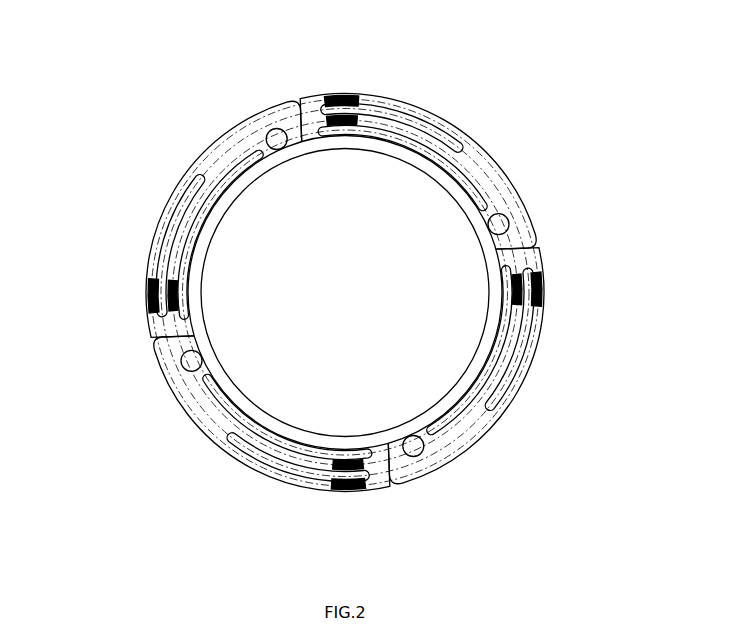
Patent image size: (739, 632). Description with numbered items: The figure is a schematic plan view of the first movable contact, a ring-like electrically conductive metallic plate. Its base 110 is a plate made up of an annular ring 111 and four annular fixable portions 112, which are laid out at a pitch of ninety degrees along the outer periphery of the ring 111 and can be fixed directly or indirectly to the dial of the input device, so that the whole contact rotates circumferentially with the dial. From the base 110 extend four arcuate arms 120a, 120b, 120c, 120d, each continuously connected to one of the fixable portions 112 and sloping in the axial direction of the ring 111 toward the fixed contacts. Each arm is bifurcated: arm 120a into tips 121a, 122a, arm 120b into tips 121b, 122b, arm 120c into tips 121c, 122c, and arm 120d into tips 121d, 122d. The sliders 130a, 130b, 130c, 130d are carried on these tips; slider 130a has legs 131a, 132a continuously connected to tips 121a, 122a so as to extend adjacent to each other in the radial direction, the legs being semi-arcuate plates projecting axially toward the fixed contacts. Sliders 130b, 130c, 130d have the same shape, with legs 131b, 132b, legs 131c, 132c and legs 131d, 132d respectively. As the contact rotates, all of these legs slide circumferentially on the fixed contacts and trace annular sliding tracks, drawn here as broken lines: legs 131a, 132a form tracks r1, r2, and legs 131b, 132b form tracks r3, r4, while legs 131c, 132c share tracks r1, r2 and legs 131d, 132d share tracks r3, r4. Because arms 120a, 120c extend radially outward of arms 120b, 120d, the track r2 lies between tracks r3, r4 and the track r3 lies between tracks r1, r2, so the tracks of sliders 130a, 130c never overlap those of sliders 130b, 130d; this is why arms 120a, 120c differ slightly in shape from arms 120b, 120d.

The base 110 is at (163, 380).
The ring 111 is at (493, 266).
The fixable portion 112 is at (277, 127).
The first arm 120a is at (468, 143).
The second arm 120b is at (206, 157).
The third arm 120c is at (222, 442).
The fourth arm 120d is at (483, 430).
The tip 121a is at (399, 122).
The tip 121b is at (183, 234).
The tip 121c is at (270, 452).
The tip 121d is at (508, 352).
The tip 122a is at (436, 132).
The tip 122b is at (165, 262).
The tip 122c is at (297, 470).
The tip 122d is at (505, 384).
The first slider 130a is at (388, 54).
The second slider 130b is at (90, 283).
The third slider 130c is at (387, 532).
The fourth slider 130d is at (612, 283).
The first leg 131a is at (350, 97).
The second leg 131b is at (151, 291).
The third leg 131c is at (350, 492).
The fourth leg 131d is at (538, 292).
The first leg 132a is at (333, 116).
The second leg 132b is at (170, 300).
The third leg 132c is at (338, 472).
The fourth leg 132d is at (522, 303).
The sliding track r1 is at (252, 124).
The sliding track r2 is at (241, 138).
The sliding track r3 is at (233, 158).
The sliding track r4 is at (205, 158).